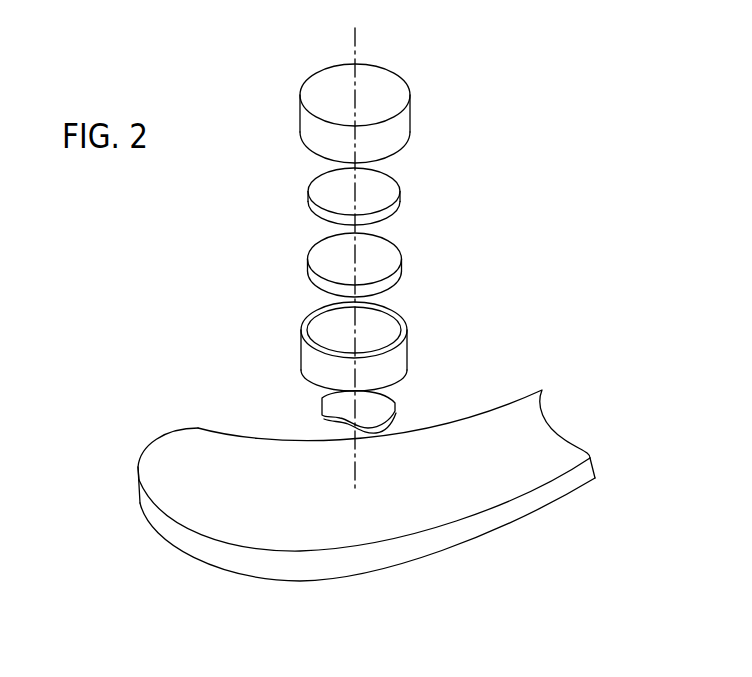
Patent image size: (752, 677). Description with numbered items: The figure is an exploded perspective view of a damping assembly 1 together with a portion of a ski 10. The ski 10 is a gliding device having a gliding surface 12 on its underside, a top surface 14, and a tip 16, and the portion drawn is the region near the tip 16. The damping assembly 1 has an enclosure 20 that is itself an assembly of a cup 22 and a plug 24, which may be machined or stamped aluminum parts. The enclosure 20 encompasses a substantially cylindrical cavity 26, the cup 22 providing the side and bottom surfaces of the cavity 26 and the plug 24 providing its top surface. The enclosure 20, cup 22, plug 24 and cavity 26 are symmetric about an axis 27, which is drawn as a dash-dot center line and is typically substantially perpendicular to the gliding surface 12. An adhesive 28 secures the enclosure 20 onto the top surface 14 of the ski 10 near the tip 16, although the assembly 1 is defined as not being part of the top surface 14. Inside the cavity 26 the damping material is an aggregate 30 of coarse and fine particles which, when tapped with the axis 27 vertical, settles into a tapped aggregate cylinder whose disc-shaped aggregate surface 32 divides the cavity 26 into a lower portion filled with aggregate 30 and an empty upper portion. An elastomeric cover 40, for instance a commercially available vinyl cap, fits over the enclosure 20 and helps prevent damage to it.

The damping assembly 1 is at (475, 94).
The ski 10 is at (365, 465).
The gliding surface 12 is at (366, 519).
The top surface 14 is at (497, 473).
The tip 16 is at (176, 434).
The enclosure 20 is at (470, 203).
The cup 22 is at (393, 346).
The plug 24 is at (315, 186).
The cavity 26 is at (386, 321).
The axis 27 is at (309, 255).
The adhesive 28 is at (290, 389).
The aggregate 30 is at (316, 281).
The aggregate surface 32 is at (316, 242).
The elastomeric cover 40 is at (401, 95).